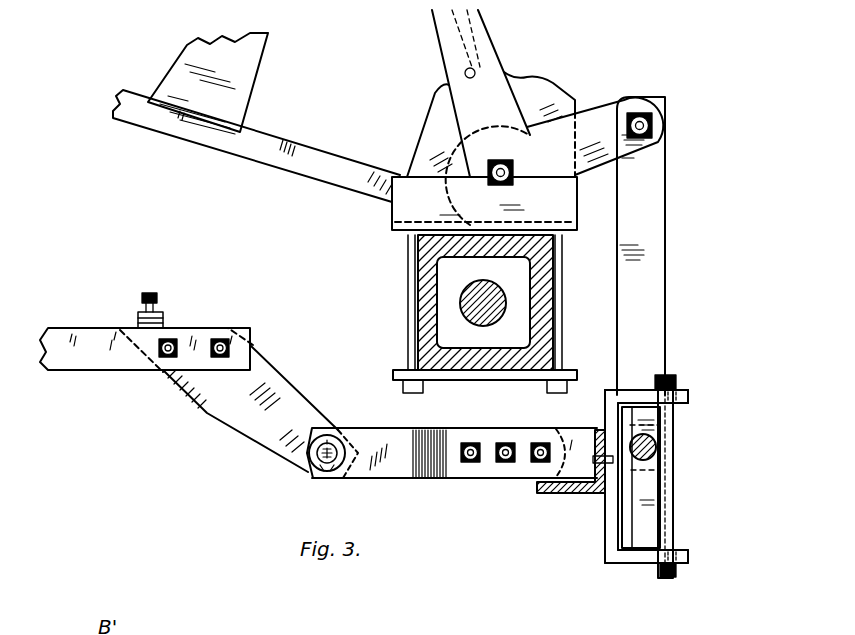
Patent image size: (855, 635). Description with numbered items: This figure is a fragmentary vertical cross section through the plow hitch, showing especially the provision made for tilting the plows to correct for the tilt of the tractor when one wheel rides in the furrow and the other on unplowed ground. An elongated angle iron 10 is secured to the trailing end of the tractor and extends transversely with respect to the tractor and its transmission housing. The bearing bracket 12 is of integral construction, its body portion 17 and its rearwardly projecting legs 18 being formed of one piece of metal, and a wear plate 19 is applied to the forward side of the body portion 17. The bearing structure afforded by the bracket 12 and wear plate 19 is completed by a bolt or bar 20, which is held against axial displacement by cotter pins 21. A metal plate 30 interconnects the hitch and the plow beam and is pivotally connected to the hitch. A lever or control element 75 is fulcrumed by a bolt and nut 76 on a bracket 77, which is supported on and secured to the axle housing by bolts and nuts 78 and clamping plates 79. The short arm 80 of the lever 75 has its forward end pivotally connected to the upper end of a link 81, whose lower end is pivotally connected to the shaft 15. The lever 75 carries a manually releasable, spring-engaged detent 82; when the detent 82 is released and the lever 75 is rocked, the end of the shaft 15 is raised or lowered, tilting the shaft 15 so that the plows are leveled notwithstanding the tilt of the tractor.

The angle iron 10 is at (581, 496).
The bearing bracket 12 is at (690, 387).
The shaft 15 is at (655, 442).
The body portion 17 is at (612, 530).
The rearwardly projecting legs 18 is at (637, 397).
The wear plate 19 is at (628, 512).
The bolt or bar 20 is at (676, 455).
The cotter pins 21 is at (672, 378).
The metal plate 30 is at (266, 398).
The lever or control element 75 is at (483, 45).
The bolt and nut 76 is at (503, 163).
The bracket 77 is at (428, 137).
The bolts and nuts 78 is at (408, 277).
The clamping plates 79 is at (470, 380).
The short arm 80 is at (593, 133).
The link 81 is at (650, 257).
The detent 82 is at (455, 25).